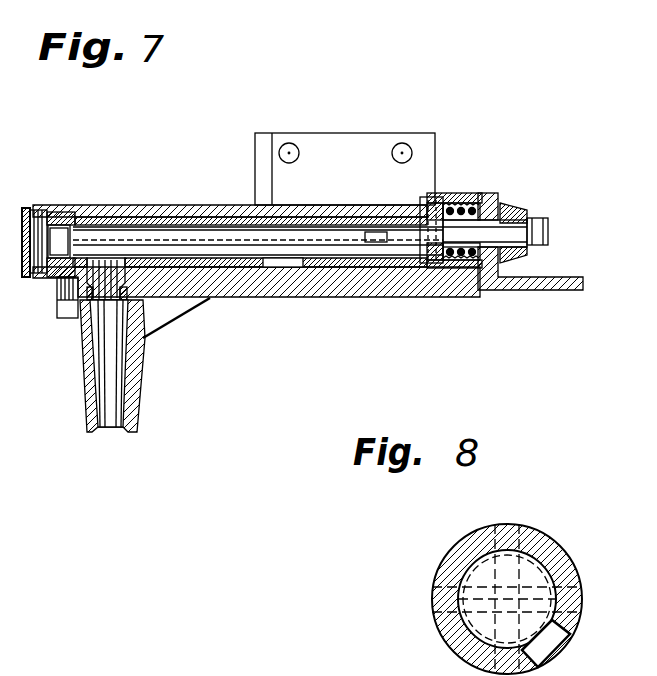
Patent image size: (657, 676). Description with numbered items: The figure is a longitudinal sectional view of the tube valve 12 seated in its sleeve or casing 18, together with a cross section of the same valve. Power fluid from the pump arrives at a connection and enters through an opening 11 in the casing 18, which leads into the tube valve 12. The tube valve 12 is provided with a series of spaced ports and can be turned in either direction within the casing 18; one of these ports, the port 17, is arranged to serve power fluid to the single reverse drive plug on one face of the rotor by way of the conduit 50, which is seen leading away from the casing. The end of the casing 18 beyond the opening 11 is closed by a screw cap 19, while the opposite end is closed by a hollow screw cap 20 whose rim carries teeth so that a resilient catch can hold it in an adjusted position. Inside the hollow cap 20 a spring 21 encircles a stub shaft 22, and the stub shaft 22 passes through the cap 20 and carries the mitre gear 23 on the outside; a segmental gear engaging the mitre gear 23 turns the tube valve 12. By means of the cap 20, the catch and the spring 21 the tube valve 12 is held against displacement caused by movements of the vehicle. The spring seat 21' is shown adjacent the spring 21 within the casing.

In FIG. 7, the opening 11 is at (63, 205).
In FIG. 7, the tube valve 12 is at (88, 205).
In FIG. 8, the tube valve 12 is at (563, 562).
In FIG. 7, the port 17 is at (110, 262).
In FIG. 8, the port 17 is at (553, 652).
In FIG. 7, the casing 18 is at (187, 205).
In FIG. 7, the screw cap 19 is at (24, 276).
In FIG. 7, the hollow screw cap 20 is at (497, 200).
In FIG. 7, the spring 21 is at (454, 208).
In FIG. 7, the spring seat 21' is at (454, 293).
In FIG. 7, the stub shaft 22 is at (548, 232).
In FIG. 7, the mitre gear 23 is at (521, 254).
In FIG. 7, the conduit 50 is at (83, 368).